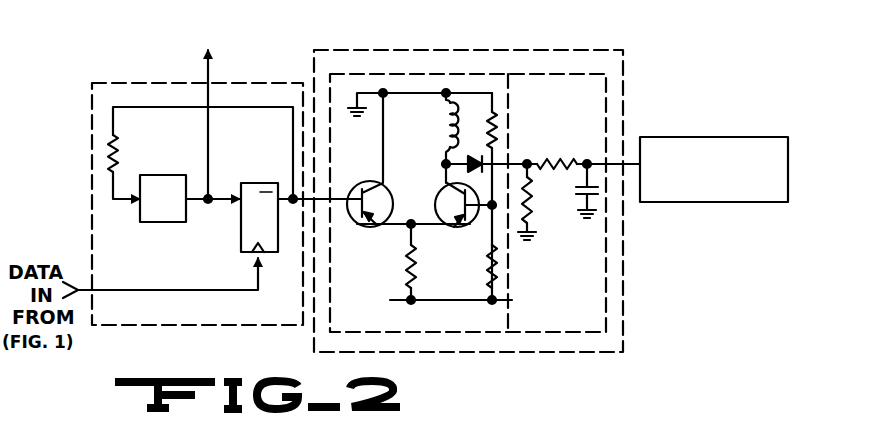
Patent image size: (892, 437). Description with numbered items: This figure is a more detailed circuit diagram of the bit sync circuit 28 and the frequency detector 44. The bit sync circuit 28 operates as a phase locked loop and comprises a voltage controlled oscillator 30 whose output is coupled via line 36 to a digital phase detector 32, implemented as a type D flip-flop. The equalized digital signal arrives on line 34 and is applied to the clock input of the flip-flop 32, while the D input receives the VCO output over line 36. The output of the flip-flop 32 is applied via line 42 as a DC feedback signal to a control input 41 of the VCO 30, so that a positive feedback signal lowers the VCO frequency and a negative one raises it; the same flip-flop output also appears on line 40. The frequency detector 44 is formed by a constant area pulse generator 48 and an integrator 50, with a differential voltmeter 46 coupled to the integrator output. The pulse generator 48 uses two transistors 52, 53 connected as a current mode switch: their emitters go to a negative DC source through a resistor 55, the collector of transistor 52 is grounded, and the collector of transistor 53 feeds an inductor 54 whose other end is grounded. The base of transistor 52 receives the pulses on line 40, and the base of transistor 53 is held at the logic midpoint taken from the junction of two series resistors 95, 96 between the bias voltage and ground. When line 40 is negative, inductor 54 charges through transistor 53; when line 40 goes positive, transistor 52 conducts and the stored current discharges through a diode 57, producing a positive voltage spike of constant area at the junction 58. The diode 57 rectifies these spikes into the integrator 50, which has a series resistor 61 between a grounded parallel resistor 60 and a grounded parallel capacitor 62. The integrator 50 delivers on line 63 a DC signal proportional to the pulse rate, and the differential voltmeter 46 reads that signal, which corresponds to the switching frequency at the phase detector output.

The bit sync circuit 28 is at (112, 84).
The voltage controlled oscillator 30 is at (160, 175).
The digital phase detector 32 is at (255, 183).
The line 34 is at (78, 288).
The line 36 is at (206, 76).
The line 40 is at (324, 192).
The control input 41 is at (119, 150).
The line 42 is at (262, 107).
The frequency detector 44 is at (603, 57).
The differential voltmeter 46 is at (722, 138).
The constant area pulse generator 48 is at (412, 74).
The integrator 50 is at (537, 78).
The transistor 52 is at (353, 228).
The transistor 53 is at (437, 201).
The inductor 54 is at (447, 125).
The resistor 55 is at (403, 268).
The diode 57 is at (506, 160).
The junction 58 is at (445, 162).
The parallel resistor 60 is at (521, 186).
The series resistor 61 is at (580, 132).
The parallel capacitor 62 is at (597, 193).
The line 63 is at (615, 165).
The resistor 95 is at (497, 135).
The resistor 96 is at (488, 258).